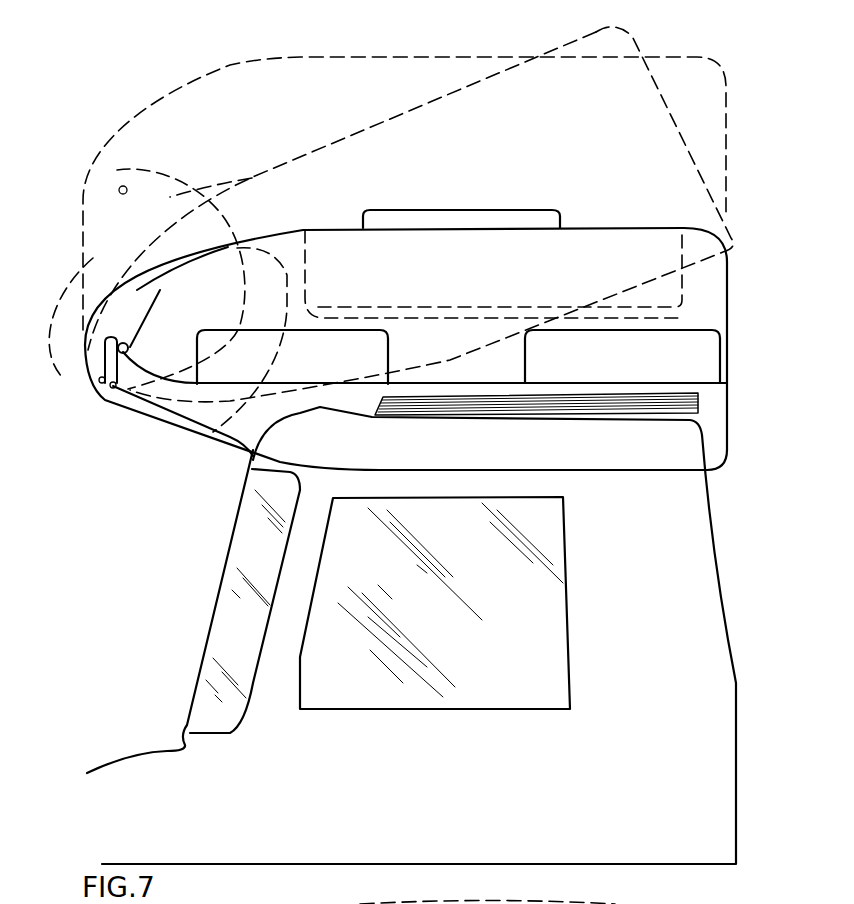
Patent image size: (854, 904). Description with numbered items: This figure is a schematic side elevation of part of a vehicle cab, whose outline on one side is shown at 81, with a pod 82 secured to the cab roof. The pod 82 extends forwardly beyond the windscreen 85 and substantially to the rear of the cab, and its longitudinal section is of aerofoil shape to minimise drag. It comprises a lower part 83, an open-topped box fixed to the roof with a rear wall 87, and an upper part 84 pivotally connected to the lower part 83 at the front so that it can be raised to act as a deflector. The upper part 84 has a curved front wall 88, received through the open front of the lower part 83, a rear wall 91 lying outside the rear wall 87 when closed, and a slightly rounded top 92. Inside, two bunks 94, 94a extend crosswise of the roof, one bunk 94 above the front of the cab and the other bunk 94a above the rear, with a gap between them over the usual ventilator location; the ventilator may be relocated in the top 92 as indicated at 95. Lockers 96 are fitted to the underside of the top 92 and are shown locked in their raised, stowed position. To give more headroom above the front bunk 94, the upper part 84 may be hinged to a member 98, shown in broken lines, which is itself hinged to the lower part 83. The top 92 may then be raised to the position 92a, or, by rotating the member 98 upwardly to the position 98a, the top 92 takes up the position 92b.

The cab outline 81 is at (206, 652).
The pod 82 is at (212, 443).
The lower part 83 is at (250, 453).
The upper part 84 is at (290, 237).
The windscreen 85 is at (225, 585).
The rear wall 87 is at (727, 334).
The curved front wall 88 is at (108, 395).
The rear wall 91 is at (727, 286).
The top 92 is at (340, 227).
The raised position of top 92a is at (310, 149).
The further raised position of top 92b is at (247, 70).
The front bunk 94 is at (334, 376).
The rear bunk 94a is at (645, 369).
The relocated ventilator 95 is at (528, 212).
The lockers 96 is at (510, 294).
The member 98 is at (288, 276).
The raised position of member 98a is at (100, 382).